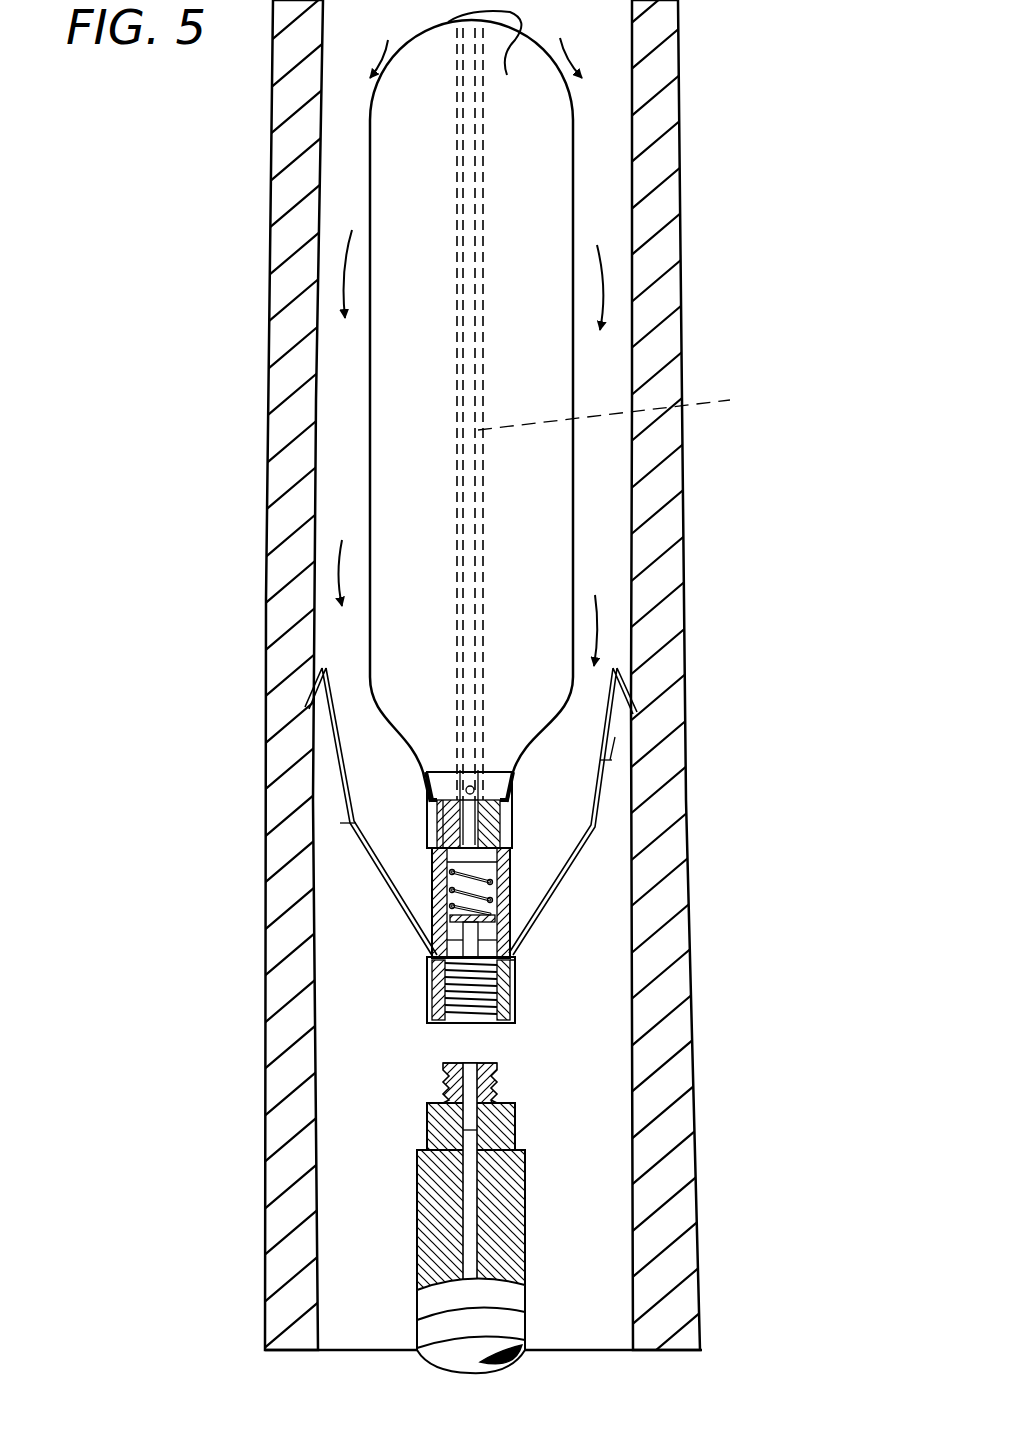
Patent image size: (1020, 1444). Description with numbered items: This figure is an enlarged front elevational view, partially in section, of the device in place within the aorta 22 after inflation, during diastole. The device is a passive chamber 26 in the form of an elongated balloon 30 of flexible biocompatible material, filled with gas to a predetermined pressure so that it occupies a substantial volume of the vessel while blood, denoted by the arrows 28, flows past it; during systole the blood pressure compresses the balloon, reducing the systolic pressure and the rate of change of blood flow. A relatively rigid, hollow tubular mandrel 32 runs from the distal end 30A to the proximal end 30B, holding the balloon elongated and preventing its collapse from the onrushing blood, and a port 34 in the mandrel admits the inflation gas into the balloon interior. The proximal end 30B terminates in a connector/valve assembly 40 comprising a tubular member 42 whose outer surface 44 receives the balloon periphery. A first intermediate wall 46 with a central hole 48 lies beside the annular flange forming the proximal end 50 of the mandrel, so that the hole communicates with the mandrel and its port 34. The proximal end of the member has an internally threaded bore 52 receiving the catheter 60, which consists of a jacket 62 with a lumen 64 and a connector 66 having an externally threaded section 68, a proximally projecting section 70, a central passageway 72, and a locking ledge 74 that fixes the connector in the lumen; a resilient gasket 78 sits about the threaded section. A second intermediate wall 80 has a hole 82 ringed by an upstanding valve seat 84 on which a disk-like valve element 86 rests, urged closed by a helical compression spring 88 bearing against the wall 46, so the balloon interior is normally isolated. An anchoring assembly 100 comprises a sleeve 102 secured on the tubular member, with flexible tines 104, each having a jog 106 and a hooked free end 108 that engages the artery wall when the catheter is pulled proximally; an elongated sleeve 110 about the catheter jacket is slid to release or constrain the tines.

The aorta 22 is at (680, 360).
The chamber 26 is at (578, 125).
The blood flow arrows 28 is at (592, 48).
The balloon 30 is at (540, 176).
The distal end of balloon 30A is at (497, 63).
The proximal end of balloon 30B is at (490, 805).
The mandrel 32 is at (480, 782).
The port 34 is at (478, 770).
The connector/valve assembly 40 is at (522, 902).
The tubular member 42 is at (500, 920).
The outer surface 44 is at (512, 838).
The first intermediate wall 46 is at (433, 862).
The central hole 48 is at (430, 805).
The proximal end of mandrel 50 is at (443, 800).
The internally threaded bore 52 is at (435, 1010).
The catheter 60 is at (505, 1300).
The jacket 62 is at (514, 1135).
The lumen 64 is at (470, 1225).
The connector 66 is at (442, 1078).
The externally threaded tubular section 68 is at (492, 1068).
The proximally projecting tubular section 70 is at (527, 1158).
The central passageway 72 is at (470, 1130).
The locking ledge 74 is at (452, 1168).
The gasket 78 is at (505, 1103).
The second intermediate wall 80 is at (440, 975).
The central hole 82 is at (445, 950).
The valve seat 84 is at (497, 955).
The valve element 86 is at (455, 918).
The helical compression spring 88 is at (448, 878).
The anchoring assembly 100 is at (624, 737).
The sleeve 102 is at (514, 995).
The tines 104 is at (612, 760).
The jog 106 is at (355, 822).
The free end of tine 108 is at (320, 688).
The elongated sleeve 110 is at (528, 1212).